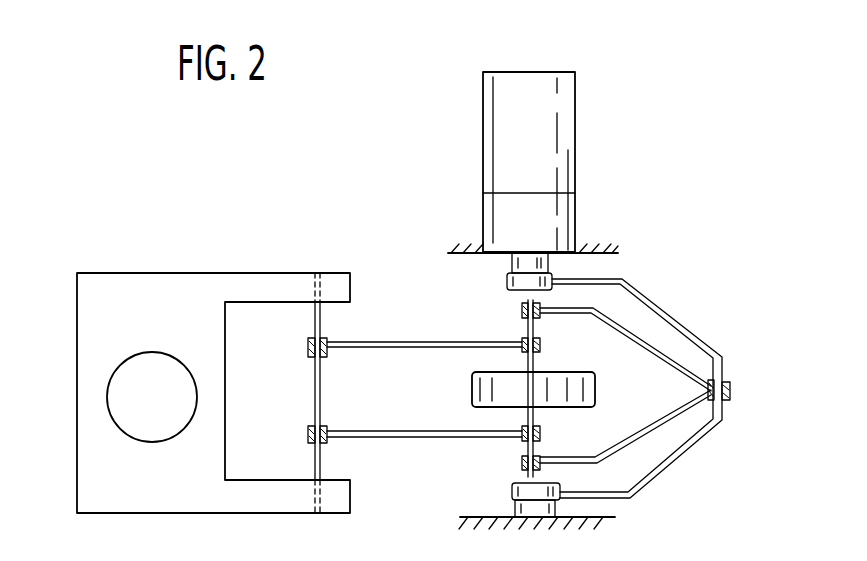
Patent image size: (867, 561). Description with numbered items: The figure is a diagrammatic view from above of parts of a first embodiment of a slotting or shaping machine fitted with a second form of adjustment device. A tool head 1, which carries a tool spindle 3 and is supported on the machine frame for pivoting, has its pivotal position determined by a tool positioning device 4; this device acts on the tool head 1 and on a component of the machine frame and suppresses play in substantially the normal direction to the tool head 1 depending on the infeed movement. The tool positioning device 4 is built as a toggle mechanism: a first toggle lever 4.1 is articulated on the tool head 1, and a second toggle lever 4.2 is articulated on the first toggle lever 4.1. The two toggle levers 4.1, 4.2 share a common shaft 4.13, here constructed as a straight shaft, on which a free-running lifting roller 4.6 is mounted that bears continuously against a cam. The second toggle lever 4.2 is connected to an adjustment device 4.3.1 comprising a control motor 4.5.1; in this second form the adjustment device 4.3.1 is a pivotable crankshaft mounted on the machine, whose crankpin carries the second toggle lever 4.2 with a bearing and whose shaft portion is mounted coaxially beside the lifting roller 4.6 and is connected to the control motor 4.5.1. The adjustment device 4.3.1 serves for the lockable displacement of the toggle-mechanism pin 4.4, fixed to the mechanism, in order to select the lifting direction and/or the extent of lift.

The tool head 1 is at (77, 450).
The tool spindle 3 is at (143, 366).
The tool positioning device 4 is at (413, 253).
The first toggle lever 4.1 is at (408, 348).
The common shaft 4.13 is at (528, 414).
The second toggle lever 4.2 is at (627, 340).
The adjustment device 4.3.1 is at (682, 447).
The toggle-mechanism pin 4.4 is at (728, 374).
The control motor 4.5.1 is at (542, 133).
The lifting roller 4.6 is at (503, 378).